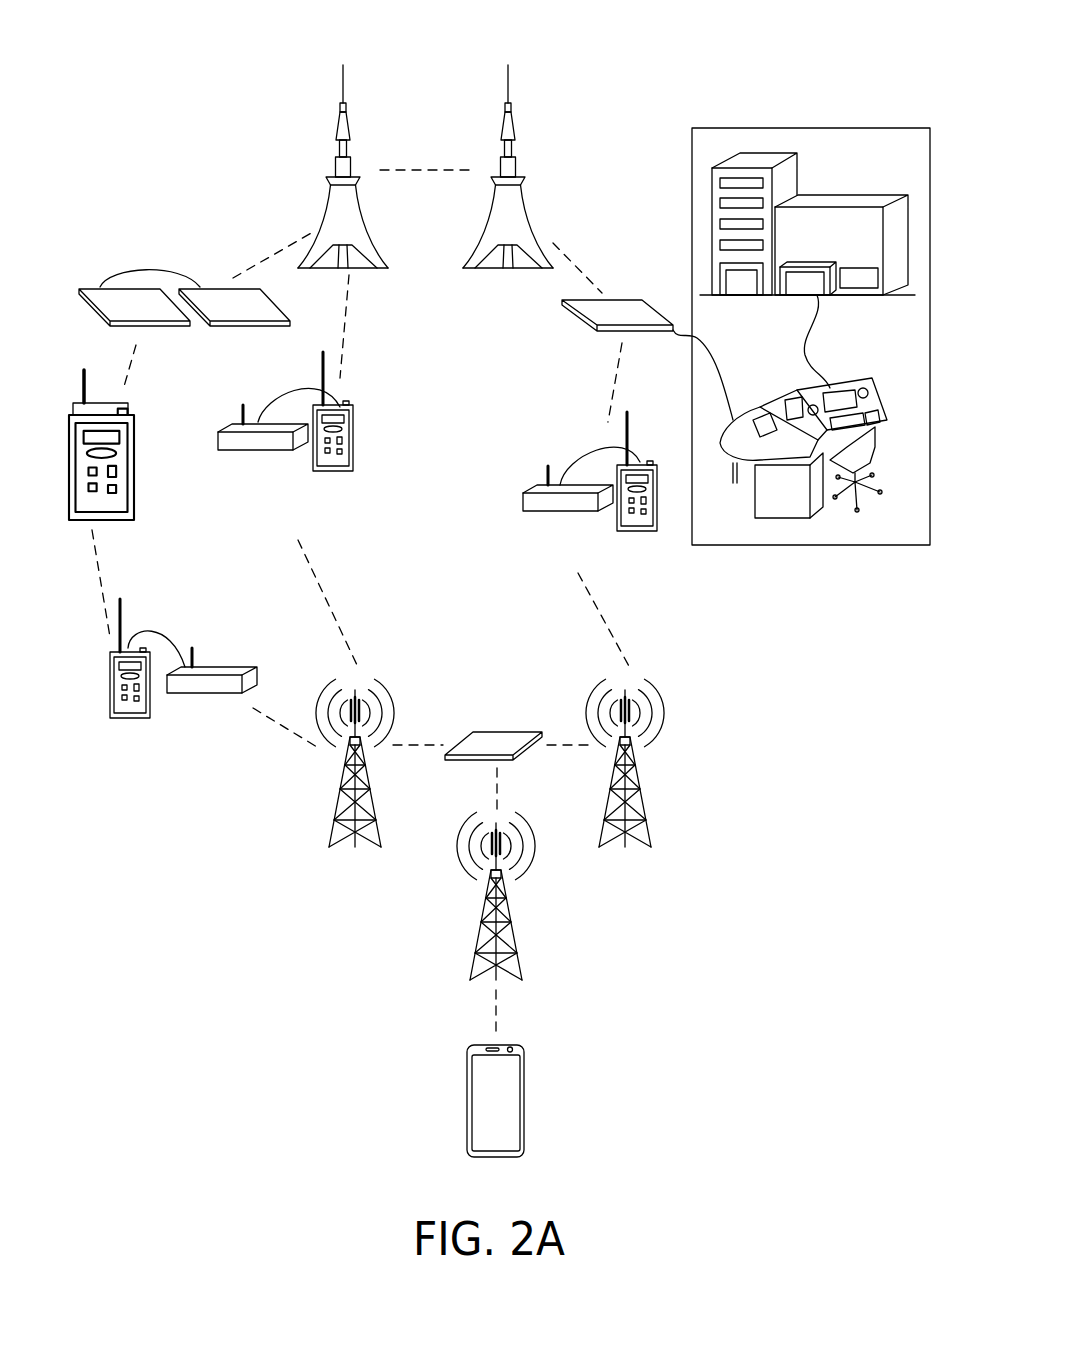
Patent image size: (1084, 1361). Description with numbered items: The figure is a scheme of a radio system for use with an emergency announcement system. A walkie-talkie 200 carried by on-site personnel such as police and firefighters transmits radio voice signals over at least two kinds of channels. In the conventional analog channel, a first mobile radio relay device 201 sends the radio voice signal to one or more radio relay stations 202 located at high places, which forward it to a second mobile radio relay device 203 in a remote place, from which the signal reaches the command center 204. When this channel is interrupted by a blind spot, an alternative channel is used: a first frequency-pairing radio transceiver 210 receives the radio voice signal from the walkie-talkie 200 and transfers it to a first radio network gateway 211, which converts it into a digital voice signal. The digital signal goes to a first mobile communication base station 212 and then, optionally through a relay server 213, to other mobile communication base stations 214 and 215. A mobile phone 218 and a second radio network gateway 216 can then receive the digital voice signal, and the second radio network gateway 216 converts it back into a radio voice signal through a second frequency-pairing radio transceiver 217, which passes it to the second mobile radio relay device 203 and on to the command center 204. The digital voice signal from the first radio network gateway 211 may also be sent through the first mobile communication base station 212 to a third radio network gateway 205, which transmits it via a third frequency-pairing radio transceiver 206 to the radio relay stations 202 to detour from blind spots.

The walkie-talkie 200 is at (120, 522).
The first mobile radio relay device 201 is at (190, 323).
The radio relay stations 202 is at (483, 250).
The second mobile radio relay device 203 is at (640, 298).
The command center 204 is at (805, 547).
The third radio network gateway 205 is at (255, 452).
The third frequency-pairing radio transceiver 206 is at (335, 472).
The first frequency-pairing radio transceiver 210 is at (130, 719).
The first radio network gateway 211 is at (200, 694).
The first mobile communication base station 212 is at (330, 830).
The relay server 213 is at (497, 730).
The mobile communication base station 214 is at (650, 830).
The mobile communication base station 215 is at (522, 965).
The second radio network gateway 216 is at (560, 512).
The second frequency-pairing radio transceiver 217 is at (638, 534).
The mobile phone 218 is at (526, 1100).